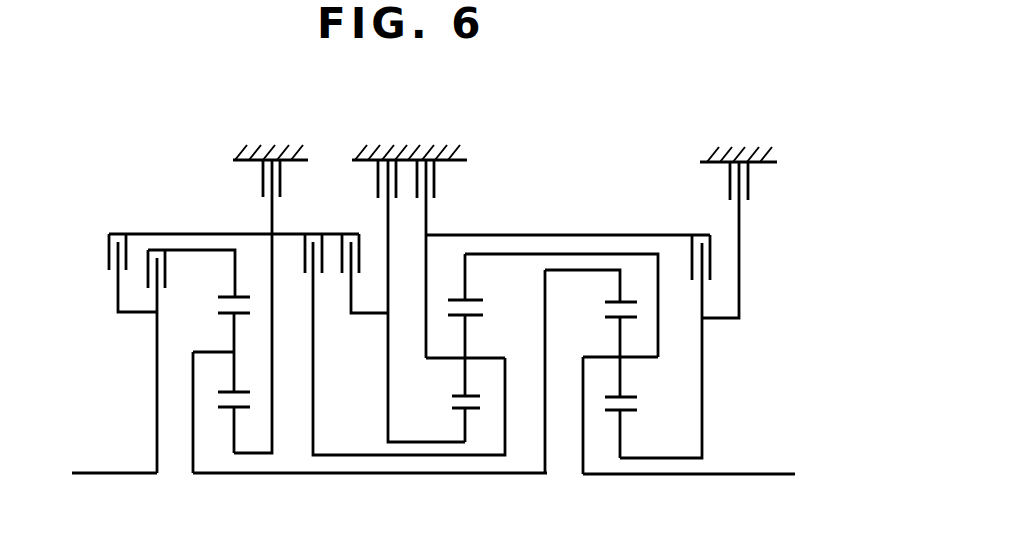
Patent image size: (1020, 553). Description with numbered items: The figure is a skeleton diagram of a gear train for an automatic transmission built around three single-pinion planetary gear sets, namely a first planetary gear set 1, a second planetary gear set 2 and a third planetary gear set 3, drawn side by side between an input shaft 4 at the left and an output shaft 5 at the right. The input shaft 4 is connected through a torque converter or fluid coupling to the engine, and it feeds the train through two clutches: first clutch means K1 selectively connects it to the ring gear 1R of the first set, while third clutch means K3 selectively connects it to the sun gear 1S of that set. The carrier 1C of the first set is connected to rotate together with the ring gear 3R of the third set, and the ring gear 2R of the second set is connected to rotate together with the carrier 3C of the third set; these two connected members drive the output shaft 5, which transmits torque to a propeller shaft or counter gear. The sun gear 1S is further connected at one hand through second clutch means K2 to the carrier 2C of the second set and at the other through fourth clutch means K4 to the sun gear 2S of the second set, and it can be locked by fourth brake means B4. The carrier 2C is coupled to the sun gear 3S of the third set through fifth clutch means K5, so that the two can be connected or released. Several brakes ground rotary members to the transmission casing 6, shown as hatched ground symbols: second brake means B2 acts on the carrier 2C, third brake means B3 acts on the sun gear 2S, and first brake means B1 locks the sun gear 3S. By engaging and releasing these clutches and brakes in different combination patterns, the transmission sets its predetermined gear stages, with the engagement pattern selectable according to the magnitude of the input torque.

The first planetary gear set 1 is at (228, 395).
The second planetary gear set 2 is at (535, 389).
The third planetary gear set 3 is at (606, 399).
The input shaft 4 is at (116, 472).
The output shaft 5 is at (739, 475).
The transmission casing 6 is at (250, 152).
The first clutch means K1 is at (191, 361).
The second clutch means K2 is at (401, 331).
The third clutch means K3 is at (227, 258).
The fourth clutch means K4 is at (365, 260).
The fifth clutch means K5 is at (569, 335).
The first brake means B1 is at (730, 219).
The second brake means B2 is at (433, 235).
The third brake means B3 is at (417, 277).
The fourth brake means B4 is at (259, 283).
The ring gear of the first planetary gear set 1R is at (241, 298).
The carrier of the first planetary gear set 1C is at (222, 352).
The sun gear of the first planetary gear set 1S is at (240, 409).
The ring gear of the second planetary gear set 2R is at (465, 299).
The carrier of the second planetary gear set 2C is at (483, 357).
The sun gear of the second planetary gear set 2S is at (462, 411).
The ring gear of the third planetary gear set 3R is at (613, 301).
The carrier of the third planetary gear set 3C is at (602, 357).
The sun gear of the third planetary gear set 3S is at (628, 412).